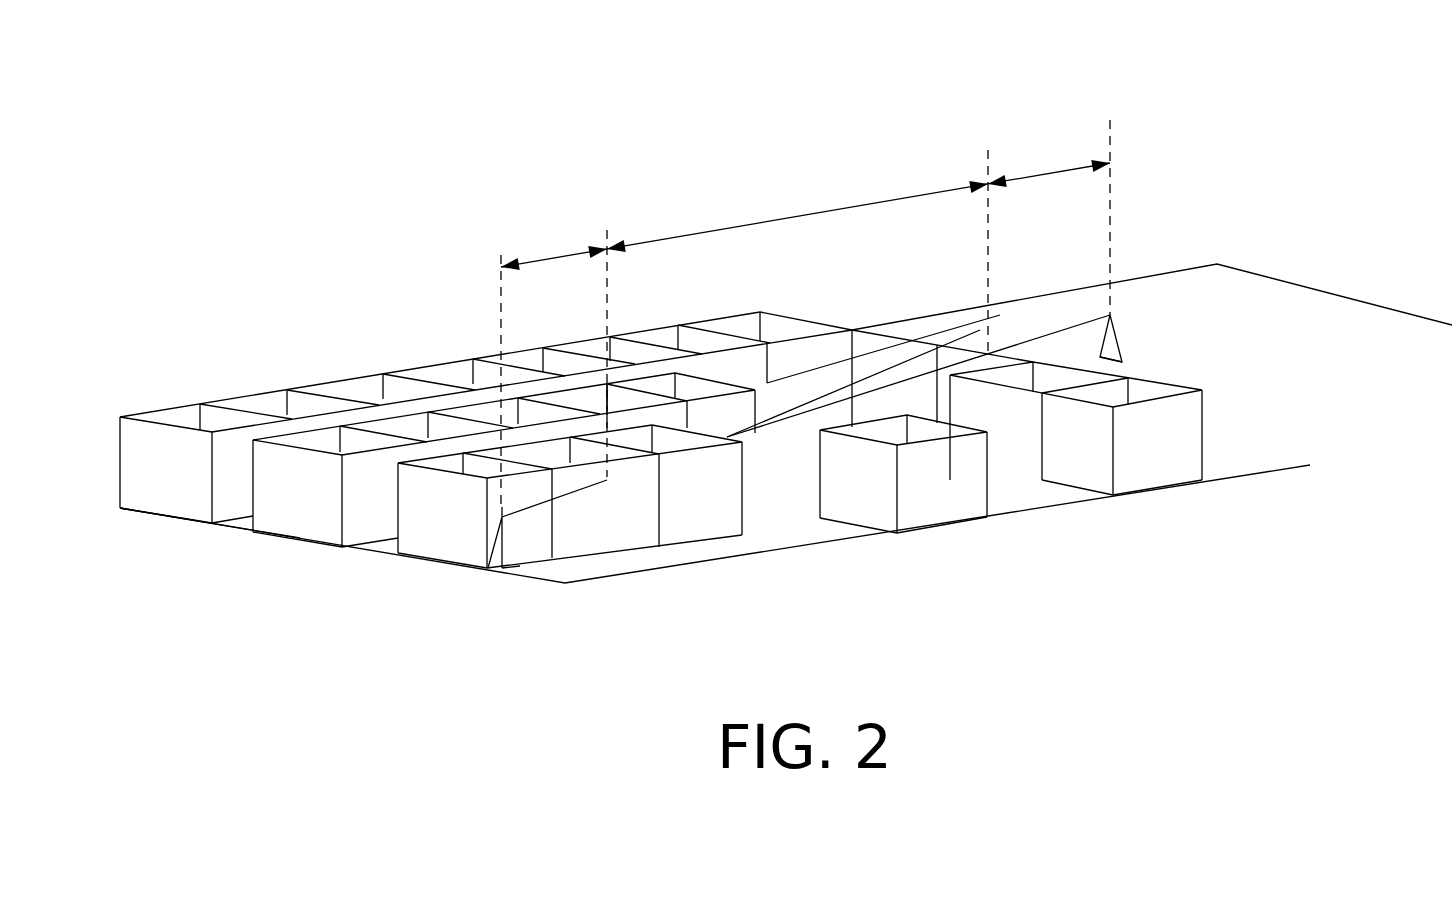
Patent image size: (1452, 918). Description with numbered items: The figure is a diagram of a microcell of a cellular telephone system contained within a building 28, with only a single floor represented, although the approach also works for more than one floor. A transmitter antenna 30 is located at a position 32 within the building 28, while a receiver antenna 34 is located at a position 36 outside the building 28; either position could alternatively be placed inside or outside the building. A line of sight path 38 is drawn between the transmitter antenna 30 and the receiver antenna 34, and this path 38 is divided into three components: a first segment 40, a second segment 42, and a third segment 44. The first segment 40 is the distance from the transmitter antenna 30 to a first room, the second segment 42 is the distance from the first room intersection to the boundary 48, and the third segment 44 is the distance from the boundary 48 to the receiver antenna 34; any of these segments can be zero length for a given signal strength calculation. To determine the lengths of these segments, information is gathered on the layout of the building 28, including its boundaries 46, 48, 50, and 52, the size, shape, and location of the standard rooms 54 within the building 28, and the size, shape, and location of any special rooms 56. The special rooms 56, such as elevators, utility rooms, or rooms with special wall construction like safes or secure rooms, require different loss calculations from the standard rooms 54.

The building 28 is at (824, 56).
The transmitter antenna 30 is at (488, 568).
The position of transmitter antenna 32 is at (502, 517).
The receiver antenna 34 is at (1110, 315).
The position of receiver antenna 36 is at (1127, 360).
The line of sight path 38 is at (920, 377).
The segment d1 40 is at (568, 256).
The segment d2 42 is at (722, 222).
The segment d3 44 is at (1068, 172).
The boundary 46 is at (791, 549).
The boundary 48 is at (960, 347).
The boundary 50 is at (430, 362).
The boundary 52 is at (233, 527).
The standard rooms 54 is at (330, 382).
The special rooms 56 is at (945, 508).